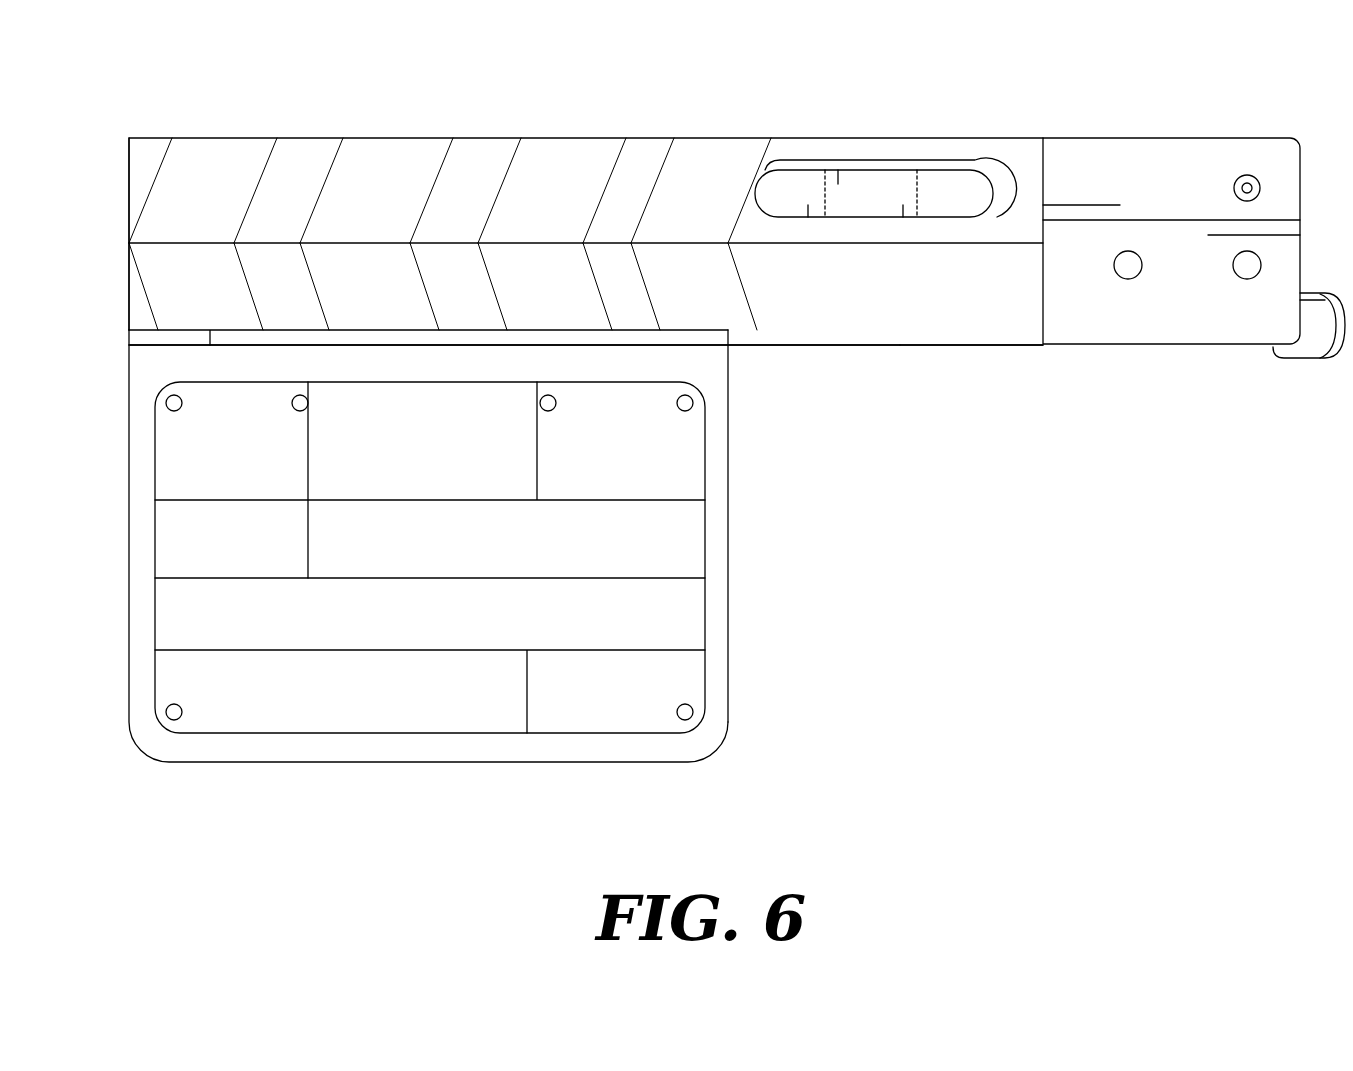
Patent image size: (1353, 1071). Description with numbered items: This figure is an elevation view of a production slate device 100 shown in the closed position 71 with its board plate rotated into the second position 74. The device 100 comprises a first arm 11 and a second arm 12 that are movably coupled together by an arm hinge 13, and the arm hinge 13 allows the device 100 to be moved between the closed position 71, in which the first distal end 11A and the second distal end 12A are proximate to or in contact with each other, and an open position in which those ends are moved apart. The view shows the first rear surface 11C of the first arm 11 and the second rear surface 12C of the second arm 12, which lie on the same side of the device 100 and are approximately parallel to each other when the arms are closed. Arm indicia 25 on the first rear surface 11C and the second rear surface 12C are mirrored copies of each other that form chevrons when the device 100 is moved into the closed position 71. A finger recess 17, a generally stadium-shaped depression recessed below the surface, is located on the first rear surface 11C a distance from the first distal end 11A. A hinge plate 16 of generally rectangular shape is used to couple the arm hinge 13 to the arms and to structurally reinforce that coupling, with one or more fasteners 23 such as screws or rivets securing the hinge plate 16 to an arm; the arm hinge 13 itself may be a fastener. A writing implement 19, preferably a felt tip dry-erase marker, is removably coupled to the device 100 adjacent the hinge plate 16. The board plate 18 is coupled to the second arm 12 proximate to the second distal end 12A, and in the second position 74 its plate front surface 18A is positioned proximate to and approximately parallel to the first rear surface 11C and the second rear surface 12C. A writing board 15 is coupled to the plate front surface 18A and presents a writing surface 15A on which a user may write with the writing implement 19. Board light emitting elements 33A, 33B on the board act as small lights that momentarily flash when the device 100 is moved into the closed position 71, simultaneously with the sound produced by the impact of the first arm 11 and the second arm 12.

The production slate device 100 is at (556, 99).
The first arm 11 is at (850, 153).
The first distal end 11A is at (128, 167).
The first rear surface 11C is at (465, 168).
The second arm 12 is at (820, 323).
The second distal end 12A is at (129, 300).
The second rear surface 12C is at (985, 315).
The arm hinge 13 is at (1240, 190).
The writing board 15 is at (675, 546).
The writing surface 15A is at (180, 527).
The hinge plate 16 is at (1105, 165).
The finger recess 17 is at (940, 182).
The board plate 18 is at (702, 732).
The plate front surface 18A is at (160, 360).
The writing implement 19 is at (1312, 348).
The fastener 23 is at (1245, 268).
The arm indicia 25 is at (712, 170).
The board light emitting element 33A is at (298, 410).
The board light emitting element 33B is at (545, 410).
The closed position 71 is at (112, 240).
The second position 74 is at (748, 598).